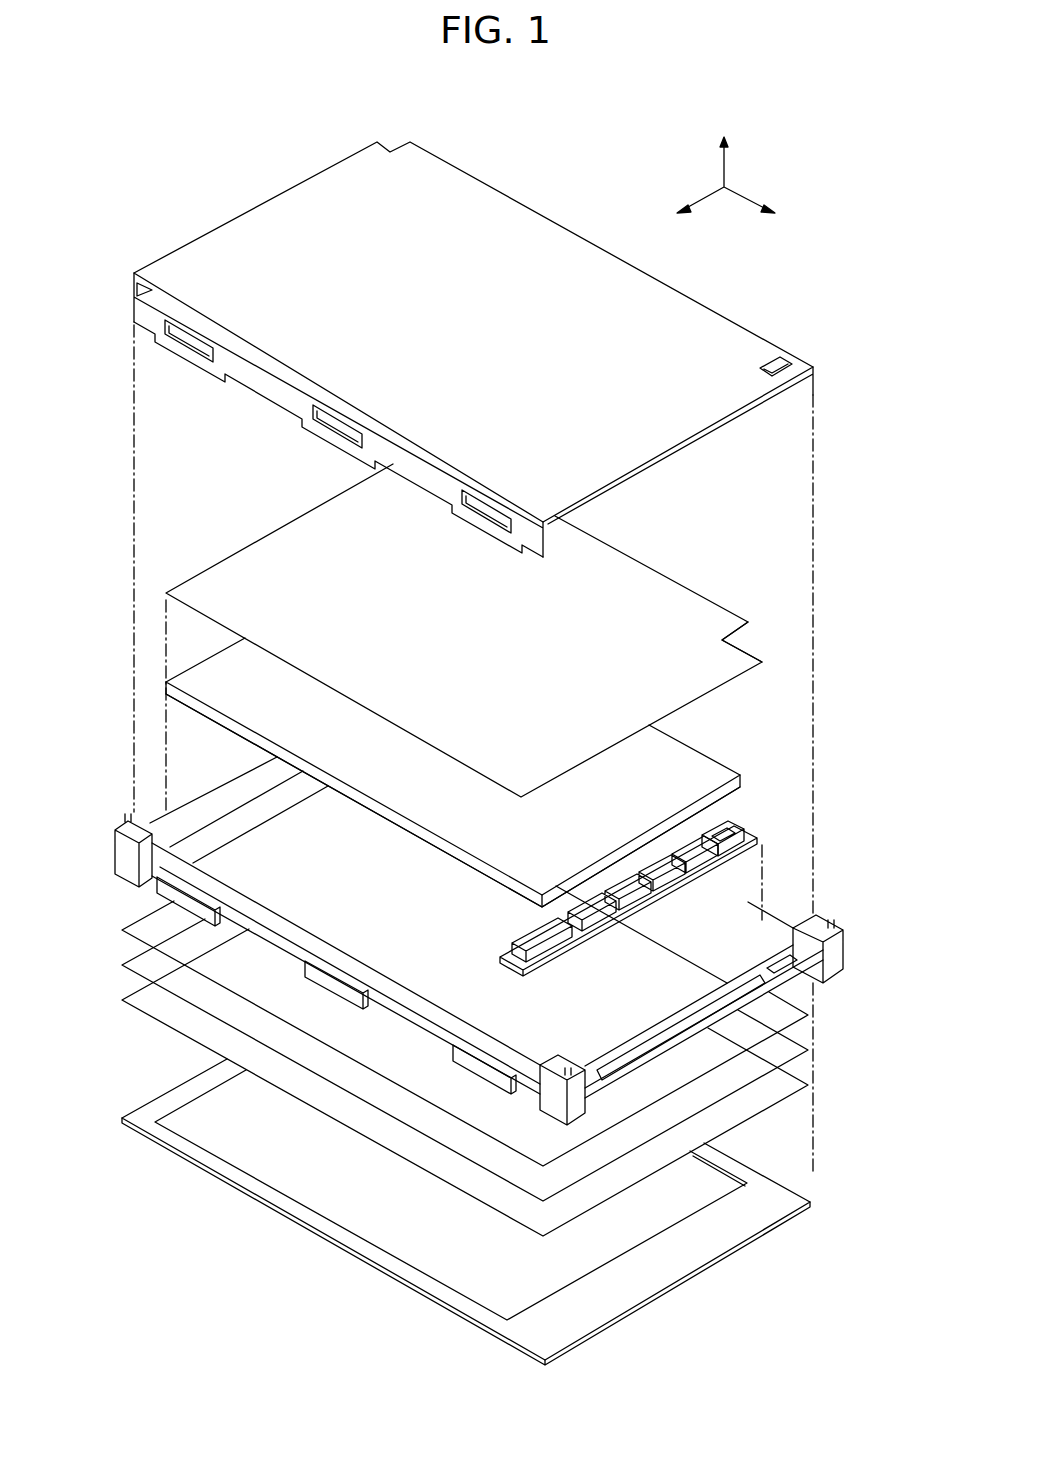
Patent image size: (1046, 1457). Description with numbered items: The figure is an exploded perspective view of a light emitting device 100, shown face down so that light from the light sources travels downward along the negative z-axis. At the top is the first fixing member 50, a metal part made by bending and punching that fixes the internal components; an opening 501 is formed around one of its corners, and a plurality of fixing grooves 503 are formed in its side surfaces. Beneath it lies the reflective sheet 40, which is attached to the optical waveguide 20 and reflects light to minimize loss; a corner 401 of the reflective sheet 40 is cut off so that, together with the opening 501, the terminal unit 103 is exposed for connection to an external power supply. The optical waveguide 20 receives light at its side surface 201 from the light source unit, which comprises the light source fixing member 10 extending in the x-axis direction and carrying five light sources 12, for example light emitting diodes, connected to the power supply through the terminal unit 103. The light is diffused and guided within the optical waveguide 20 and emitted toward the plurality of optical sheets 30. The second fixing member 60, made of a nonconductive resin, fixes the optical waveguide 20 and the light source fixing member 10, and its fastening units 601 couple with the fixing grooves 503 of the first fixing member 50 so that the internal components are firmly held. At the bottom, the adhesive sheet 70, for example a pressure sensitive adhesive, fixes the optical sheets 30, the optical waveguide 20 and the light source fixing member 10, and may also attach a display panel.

The light emitting device 100 is at (479, 110).
The first fixing member 50 is at (717, 313).
The opening 501 is at (783, 380).
The fixing grooves 503 is at (177, 346).
The reflective sheet 40 is at (692, 592).
The corner of the reflective sheet 401 is at (753, 638).
The optical waveguide 20 is at (738, 773).
The side surface 201 is at (744, 788).
The light source fixing member 10 is at (752, 821).
The terminal unit 103 is at (758, 834).
The light source 12 is at (760, 845).
The second fixing member 60 is at (842, 952).
The fastening units 601 is at (168, 897).
The optical sheets 30 is at (815, 1018).
The adhesive sheet 70 is at (763, 1220).